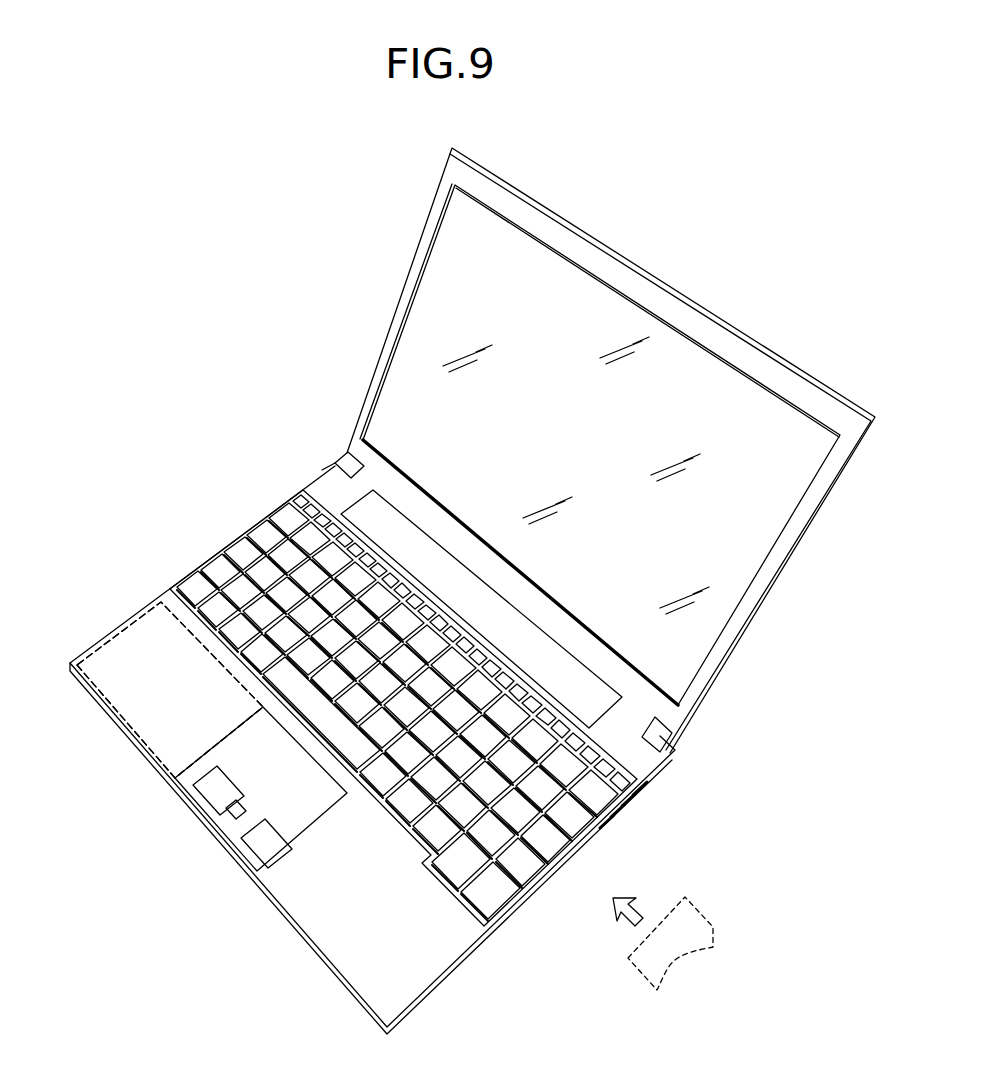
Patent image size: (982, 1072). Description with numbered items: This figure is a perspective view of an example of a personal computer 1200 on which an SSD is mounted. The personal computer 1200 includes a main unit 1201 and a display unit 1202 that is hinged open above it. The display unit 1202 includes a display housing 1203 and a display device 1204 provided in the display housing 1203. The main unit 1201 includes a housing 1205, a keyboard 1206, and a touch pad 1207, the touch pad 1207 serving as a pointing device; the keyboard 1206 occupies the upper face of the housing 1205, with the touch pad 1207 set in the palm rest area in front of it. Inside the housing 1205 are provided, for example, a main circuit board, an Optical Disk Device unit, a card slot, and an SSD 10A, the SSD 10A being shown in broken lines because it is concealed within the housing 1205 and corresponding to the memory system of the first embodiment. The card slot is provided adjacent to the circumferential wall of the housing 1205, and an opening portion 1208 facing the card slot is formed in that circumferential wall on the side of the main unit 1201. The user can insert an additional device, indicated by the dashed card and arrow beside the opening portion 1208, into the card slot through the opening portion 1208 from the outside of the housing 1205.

The personal computer 1200 is at (220, 237).
The main unit 1201 is at (208, 548).
The display unit 1202 is at (388, 311).
The display housing 1203 is at (678, 309).
The display device 1204 is at (738, 390).
The housing 1205 is at (146, 633).
The keyboard 1206 is at (405, 622).
The touch pad 1207 is at (240, 755).
The opening portion 1208 is at (612, 828).
The SSD 10A is at (157, 708).